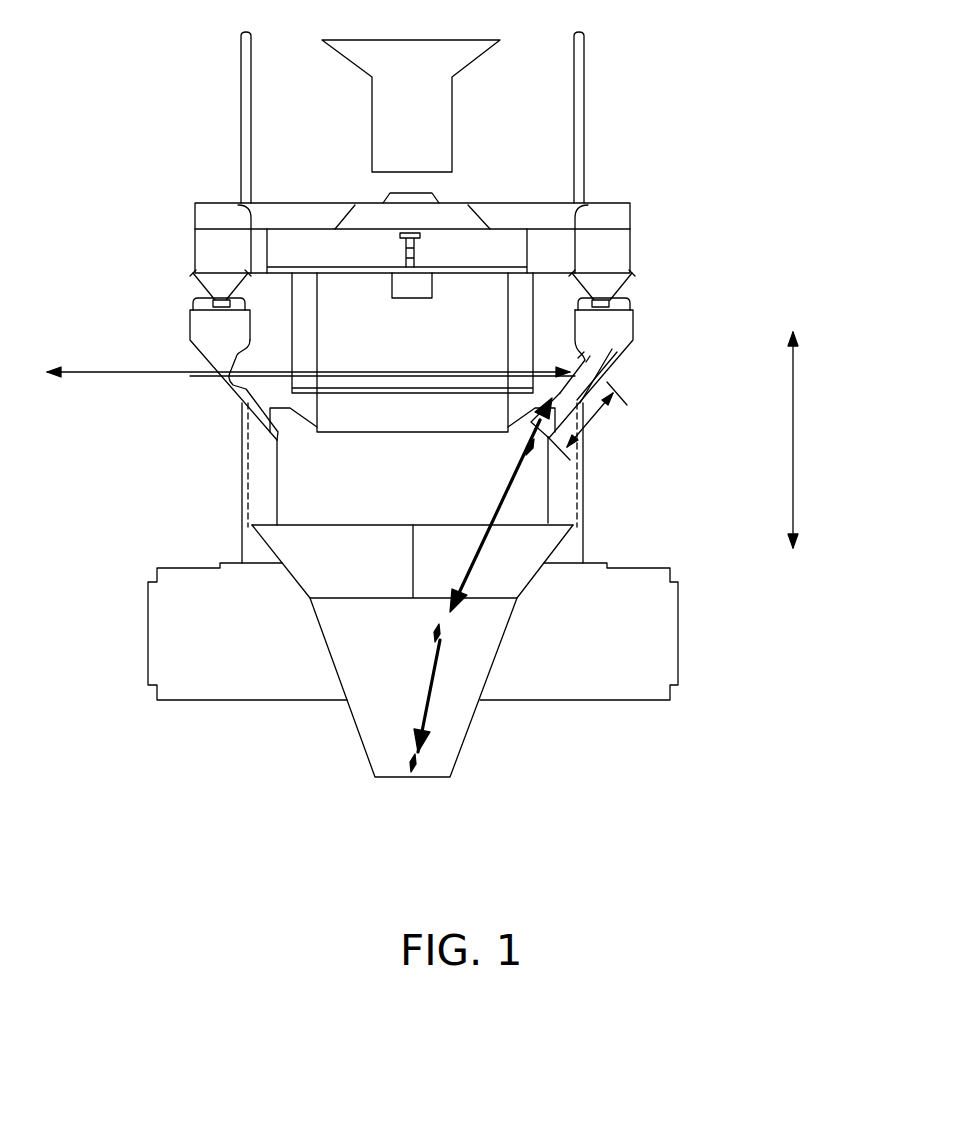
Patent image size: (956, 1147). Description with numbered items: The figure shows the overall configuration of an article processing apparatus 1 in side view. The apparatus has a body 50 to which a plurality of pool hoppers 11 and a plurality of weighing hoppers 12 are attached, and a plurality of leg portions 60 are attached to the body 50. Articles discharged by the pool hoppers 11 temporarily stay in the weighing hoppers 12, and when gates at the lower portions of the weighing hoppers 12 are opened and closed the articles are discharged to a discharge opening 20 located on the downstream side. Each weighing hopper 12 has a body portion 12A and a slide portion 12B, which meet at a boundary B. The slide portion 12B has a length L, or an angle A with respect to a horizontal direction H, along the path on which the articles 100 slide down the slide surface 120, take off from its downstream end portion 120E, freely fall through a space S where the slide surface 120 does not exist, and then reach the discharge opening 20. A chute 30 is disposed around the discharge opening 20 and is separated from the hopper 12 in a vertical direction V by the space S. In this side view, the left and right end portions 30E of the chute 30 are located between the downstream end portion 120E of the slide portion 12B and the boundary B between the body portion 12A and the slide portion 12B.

The article processing apparatus 1 is at (756, 60).
The pool hopper 11 is at (608, 248).
The weighing hopper 12 is at (623, 336).
The body portion 12A is at (613, 352).
The slide portion 12B is at (590, 403).
The slide surface 120 is at (545, 393).
The downstream end portion 120E is at (264, 444).
The body 50 is at (383, 330).
The leg portion 60 is at (260, 493).
The chute 30 is at (397, 647).
The end portion of chute 30E is at (231, 537).
The discharge opening 20 is at (385, 768).
The article 100 is at (450, 633).
The space S is at (315, 483).
The horizontal direction H is at (112, 372).
The vertical direction V is at (807, 440).
The length L is at (587, 421).
The angle A is at (543, 392).
The boundary B is at (571, 352).